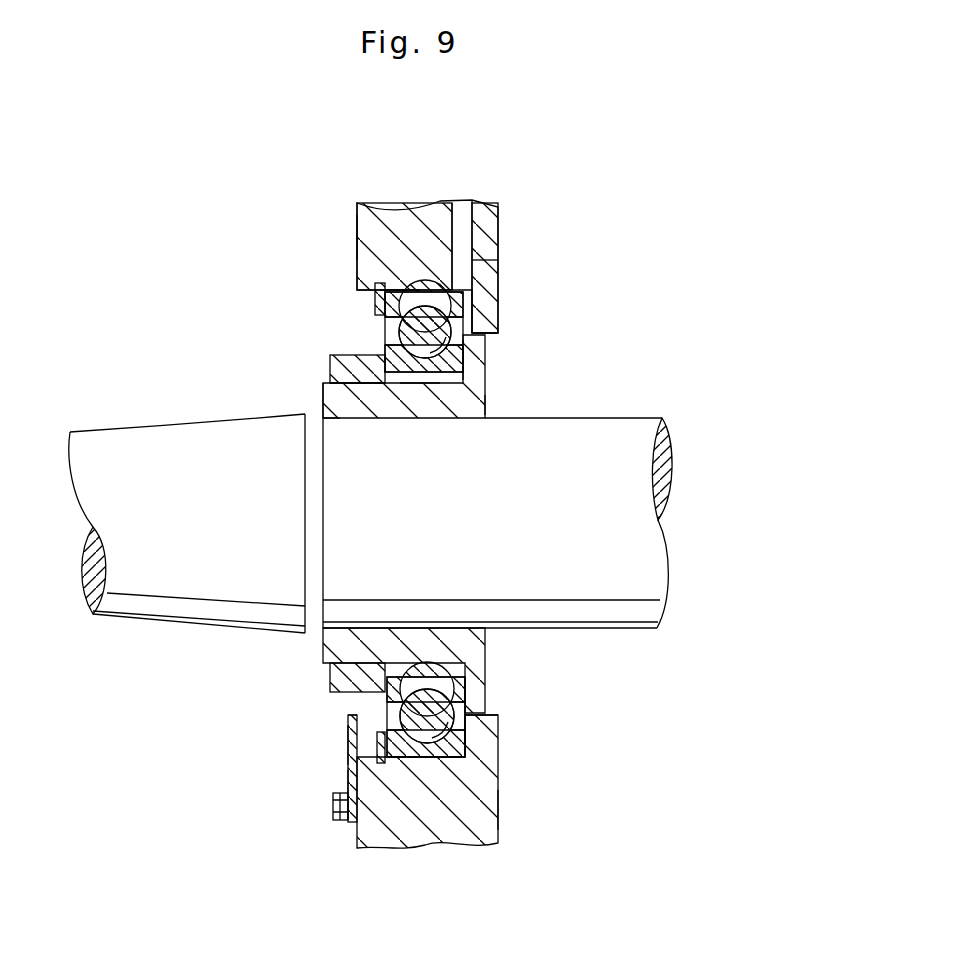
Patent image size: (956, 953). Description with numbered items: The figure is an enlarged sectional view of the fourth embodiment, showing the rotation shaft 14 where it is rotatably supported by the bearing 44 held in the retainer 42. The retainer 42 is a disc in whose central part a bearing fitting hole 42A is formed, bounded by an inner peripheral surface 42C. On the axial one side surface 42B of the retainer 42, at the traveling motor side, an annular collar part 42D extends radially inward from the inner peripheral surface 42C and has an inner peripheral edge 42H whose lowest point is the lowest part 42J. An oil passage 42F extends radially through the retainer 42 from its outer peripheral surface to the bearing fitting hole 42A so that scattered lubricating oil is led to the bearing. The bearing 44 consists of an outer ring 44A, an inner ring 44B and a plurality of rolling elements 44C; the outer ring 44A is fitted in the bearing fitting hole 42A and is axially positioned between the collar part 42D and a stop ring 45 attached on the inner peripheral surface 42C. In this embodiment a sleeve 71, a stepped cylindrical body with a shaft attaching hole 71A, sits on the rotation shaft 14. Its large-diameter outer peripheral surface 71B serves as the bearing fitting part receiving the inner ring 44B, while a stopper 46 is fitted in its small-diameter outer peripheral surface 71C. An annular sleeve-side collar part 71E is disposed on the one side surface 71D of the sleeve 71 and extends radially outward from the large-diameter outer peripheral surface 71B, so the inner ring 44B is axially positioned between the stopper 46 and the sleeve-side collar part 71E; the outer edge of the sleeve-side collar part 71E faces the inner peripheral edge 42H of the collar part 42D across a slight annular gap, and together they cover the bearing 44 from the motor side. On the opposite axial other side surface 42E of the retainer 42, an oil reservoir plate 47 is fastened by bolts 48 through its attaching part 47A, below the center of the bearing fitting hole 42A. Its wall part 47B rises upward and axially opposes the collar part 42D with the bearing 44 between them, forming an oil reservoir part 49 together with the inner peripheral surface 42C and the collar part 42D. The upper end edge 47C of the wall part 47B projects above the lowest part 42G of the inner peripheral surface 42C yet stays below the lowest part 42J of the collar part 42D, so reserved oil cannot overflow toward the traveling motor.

The rotation shaft 14 is at (175, 498).
The retainer 42 is at (503, 222).
The bearing fitting hole 42A is at (468, 763).
The axial one side surface 42B is at (500, 810).
The inner peripheral surface 42C is at (401, 290).
The collar part 42D is at (489, 743).
The axial other side surface 42E is at (357, 228).
The oil passage 42F is at (463, 267).
The lowest part of the inner peripheral surface 42G is at (410, 758).
The inner peripheral edge 42H is at (492, 343).
The lowest part of the inner peripheral edge 42J is at (489, 713).
The bearing 44 is at (378, 323).
The outer ring 44A is at (438, 748).
The inner ring 44B is at (466, 678).
The rolling elements 44C is at (430, 718).
The stop ring 45 is at (375, 302).
The stopper 46 is at (353, 358).
The oil reservoir plate 47 is at (340, 764).
The attaching part 47A is at (348, 777).
The wall part 47B is at (352, 738).
The upper end edge 47C is at (350, 714).
The bolts 48 is at (333, 808).
The oil reservoir part 49 is at (370, 742).
The sleeve 71 is at (490, 395).
The shaft attaching hole 71A is at (357, 421).
The large-diameter outer peripheral surface 71B is at (420, 364).
The small-diameter outer peripheral surface 71C is at (348, 372).
The one side surface 71D is at (487, 407).
The sleeve-side collar part 71E is at (473, 363).